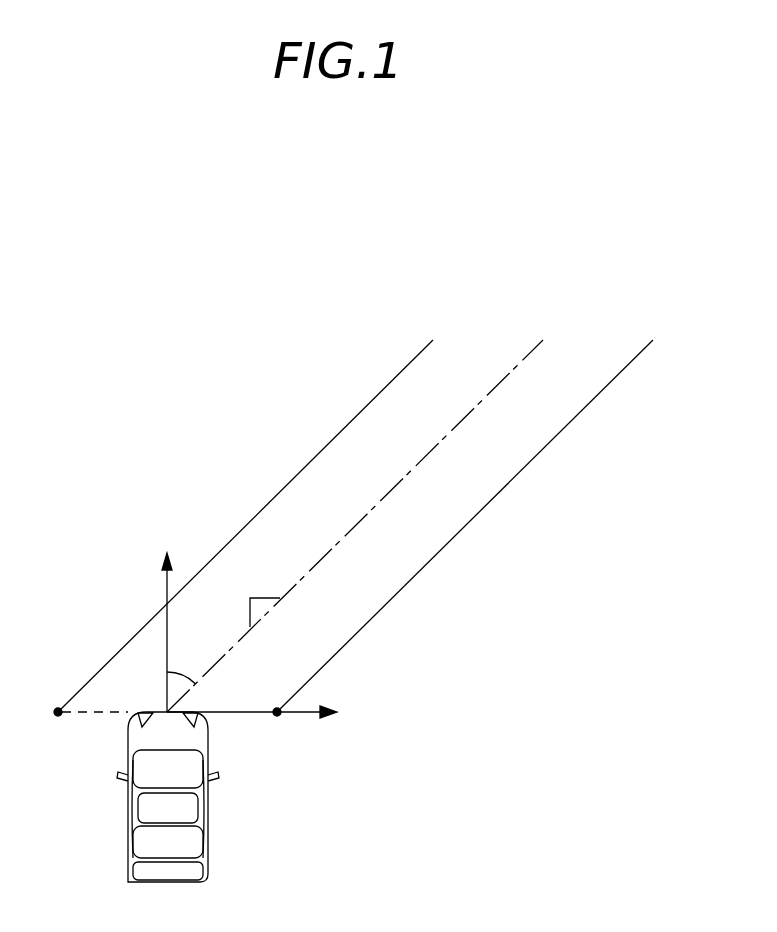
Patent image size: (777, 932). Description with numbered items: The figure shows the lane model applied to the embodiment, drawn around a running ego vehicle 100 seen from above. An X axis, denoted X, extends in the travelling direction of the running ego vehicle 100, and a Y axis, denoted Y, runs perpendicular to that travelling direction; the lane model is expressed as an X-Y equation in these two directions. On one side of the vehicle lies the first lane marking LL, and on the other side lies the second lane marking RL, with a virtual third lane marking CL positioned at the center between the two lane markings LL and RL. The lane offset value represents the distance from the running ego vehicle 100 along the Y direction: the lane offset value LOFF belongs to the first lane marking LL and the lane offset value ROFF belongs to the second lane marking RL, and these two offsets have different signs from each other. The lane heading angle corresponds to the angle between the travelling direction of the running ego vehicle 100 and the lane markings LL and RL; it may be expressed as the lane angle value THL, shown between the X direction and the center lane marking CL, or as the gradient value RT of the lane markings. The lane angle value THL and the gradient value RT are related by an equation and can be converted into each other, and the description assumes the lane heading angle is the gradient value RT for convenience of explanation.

The running ego vehicle 100 is at (208, 836).
The travelling direction axis X is at (166, 621).
The perpendicular direction axis Y is at (262, 712).
The lane offset value of the first lane marking LOFF is at (82, 728).
The lane offset value of the second lane marking ROFF is at (276, 728).
The first lane marking LL is at (251, 514).
The virtual third lane marking CL is at (361, 514).
The second lane marking RL is at (471, 514).
The lane angle value THL is at (188, 673).
The lane gradient value RT is at (260, 598).